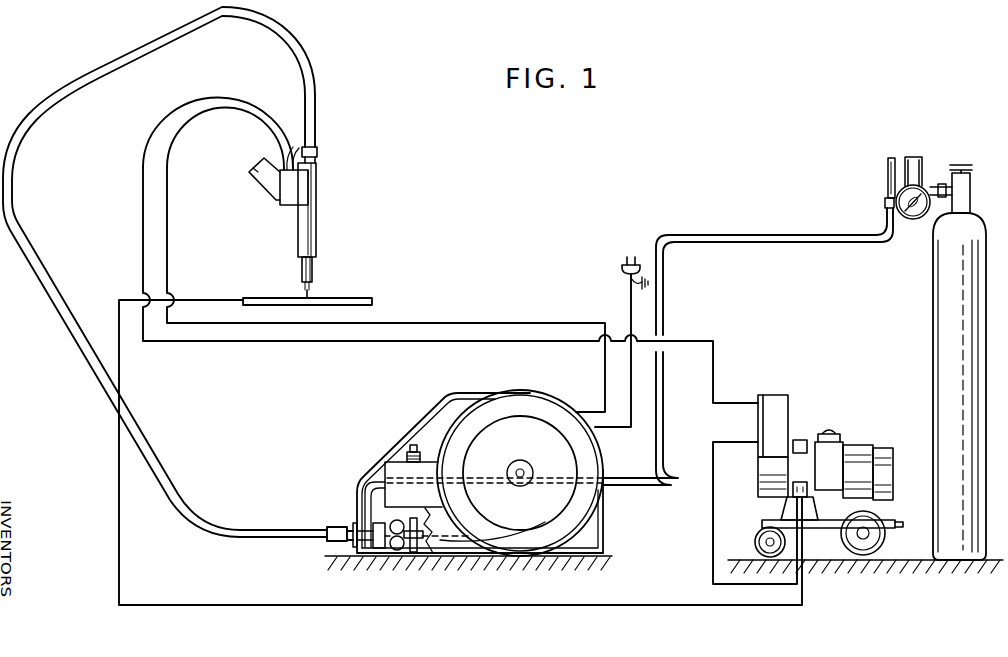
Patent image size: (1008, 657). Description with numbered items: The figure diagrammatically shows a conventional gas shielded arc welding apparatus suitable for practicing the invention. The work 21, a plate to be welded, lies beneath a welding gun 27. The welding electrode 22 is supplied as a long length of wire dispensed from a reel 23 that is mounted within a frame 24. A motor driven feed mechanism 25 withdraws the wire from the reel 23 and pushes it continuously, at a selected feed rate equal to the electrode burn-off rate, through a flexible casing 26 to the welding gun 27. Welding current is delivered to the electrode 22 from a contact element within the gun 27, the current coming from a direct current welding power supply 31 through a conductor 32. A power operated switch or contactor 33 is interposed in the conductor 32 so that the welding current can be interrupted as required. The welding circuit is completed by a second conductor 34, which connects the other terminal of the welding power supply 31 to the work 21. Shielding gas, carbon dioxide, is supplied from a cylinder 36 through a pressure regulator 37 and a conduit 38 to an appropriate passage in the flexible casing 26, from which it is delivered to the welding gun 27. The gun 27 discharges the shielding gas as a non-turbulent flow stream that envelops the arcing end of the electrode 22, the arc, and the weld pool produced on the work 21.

The work 21 is at (341, 298).
The welding electrode 22 is at (312, 286).
The reel 23 is at (570, 494).
The frame 24 is at (598, 540).
The motor driven feed mechanism 25 is at (392, 466).
The flexible casing 26 is at (40, 264).
The welding gun 27 is at (318, 219).
The direct current welding power supply 31 is at (886, 450).
The conductor 32 is at (143, 165).
The power operated switch or contactor 33 is at (788, 420).
The conductor 34 is at (668, 606).
The cylinder 36 is at (945, 321).
The pressure regulator 37 is at (919, 220).
The conduit 38 is at (803, 240).